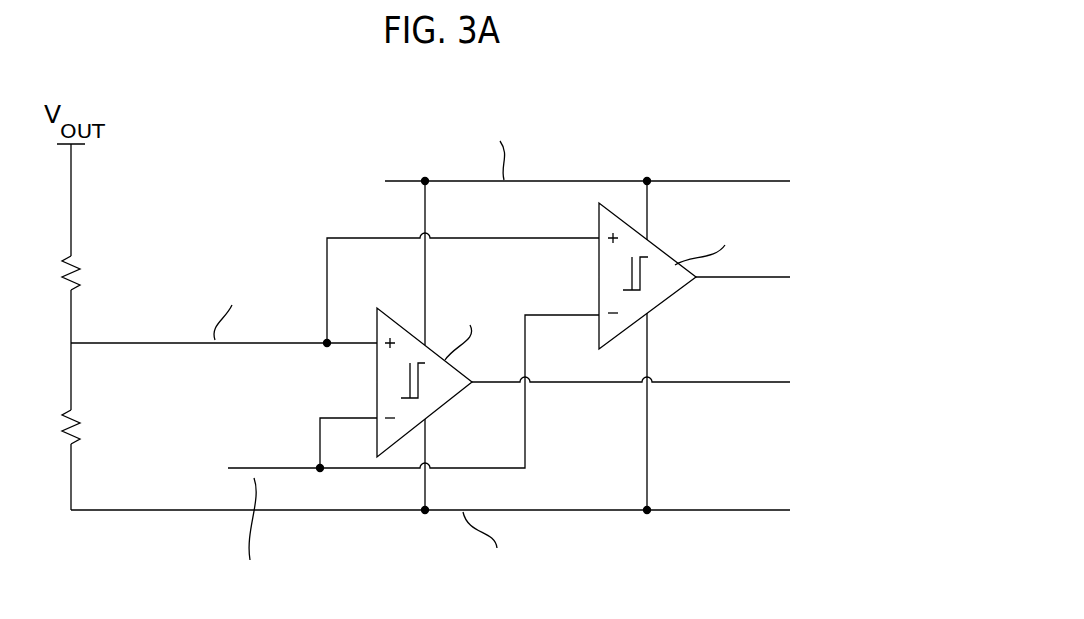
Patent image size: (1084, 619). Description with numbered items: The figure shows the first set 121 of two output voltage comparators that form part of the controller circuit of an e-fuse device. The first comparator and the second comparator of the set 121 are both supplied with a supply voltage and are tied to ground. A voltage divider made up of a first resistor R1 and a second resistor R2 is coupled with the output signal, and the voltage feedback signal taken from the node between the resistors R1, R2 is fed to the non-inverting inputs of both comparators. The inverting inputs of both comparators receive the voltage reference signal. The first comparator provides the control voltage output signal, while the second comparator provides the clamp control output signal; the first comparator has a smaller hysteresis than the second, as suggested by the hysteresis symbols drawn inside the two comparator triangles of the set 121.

The first set of output voltage comparators 121 is at (622, 141).
The voltage divider resistor R1 is at (80, 272).
The voltage divider resistor R2 is at (80, 425).